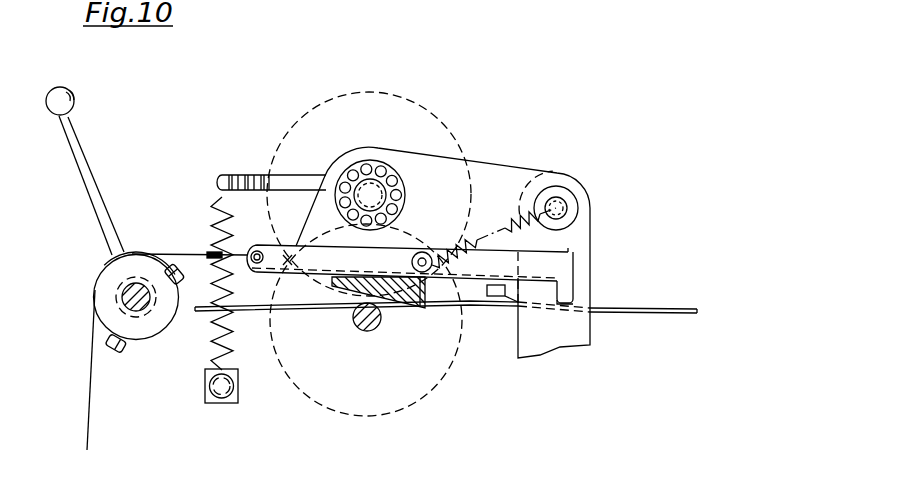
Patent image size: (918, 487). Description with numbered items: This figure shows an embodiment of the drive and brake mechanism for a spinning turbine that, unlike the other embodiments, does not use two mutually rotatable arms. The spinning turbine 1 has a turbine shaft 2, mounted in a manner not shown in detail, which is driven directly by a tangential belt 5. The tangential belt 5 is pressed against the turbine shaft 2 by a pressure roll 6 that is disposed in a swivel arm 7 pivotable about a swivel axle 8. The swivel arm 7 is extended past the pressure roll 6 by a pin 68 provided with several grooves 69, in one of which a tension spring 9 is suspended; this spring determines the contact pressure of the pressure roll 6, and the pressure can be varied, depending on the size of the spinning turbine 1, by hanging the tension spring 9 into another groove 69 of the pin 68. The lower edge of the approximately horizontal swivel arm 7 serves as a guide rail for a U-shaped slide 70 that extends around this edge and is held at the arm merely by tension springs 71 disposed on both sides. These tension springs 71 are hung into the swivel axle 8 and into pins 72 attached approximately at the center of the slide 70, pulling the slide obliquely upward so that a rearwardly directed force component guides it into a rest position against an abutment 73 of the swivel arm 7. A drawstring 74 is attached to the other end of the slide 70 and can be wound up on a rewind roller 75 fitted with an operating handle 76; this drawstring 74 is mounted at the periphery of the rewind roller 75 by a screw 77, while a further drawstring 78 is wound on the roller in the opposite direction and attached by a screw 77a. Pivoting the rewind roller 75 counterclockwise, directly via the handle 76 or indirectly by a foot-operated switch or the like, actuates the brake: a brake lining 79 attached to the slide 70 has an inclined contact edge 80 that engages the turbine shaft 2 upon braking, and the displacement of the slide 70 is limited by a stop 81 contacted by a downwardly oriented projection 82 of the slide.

The spinning turbine 1 is at (293, 383).
The turbine shaft 2 is at (360, 322).
The tangential belt 5 is at (660, 307).
The pressure roll 6 is at (415, 115).
The swivel arm 7 is at (517, 178).
The swivel axle 8 is at (565, 200).
The tension spring 9 is at (208, 214).
The pin 68 is at (300, 183).
The grooves 69 is at (268, 173).
The U-shaped slide 70 is at (303, 263).
The tension springs 71 is at (472, 233).
The pins 72 is at (423, 250).
The abutment 73 is at (577, 272).
The drawstring 74 is at (165, 253).
The rewind roller 75 is at (152, 327).
The operating handle 76 is at (83, 163).
The screw 77 is at (120, 351).
The screw 77a is at (178, 287).
The further drawstring 78 is at (89, 413).
The brake lining 79 is at (421, 298).
The inclined contact edge 80 is at (413, 298).
The stop 81 is at (497, 293).
The projection 82 is at (570, 305).